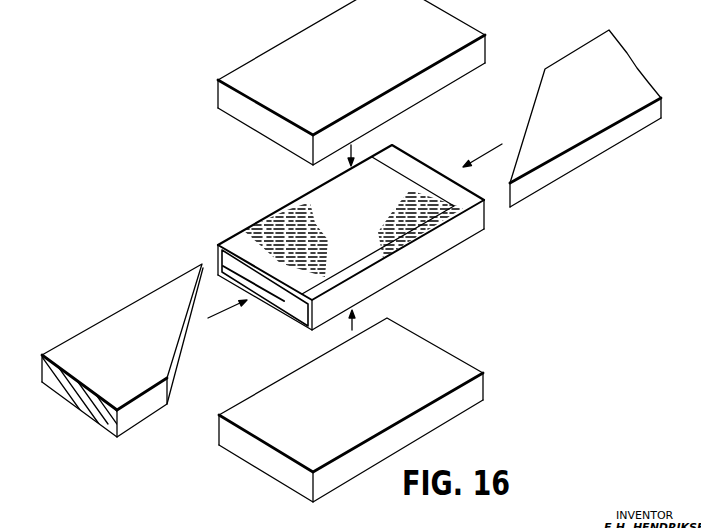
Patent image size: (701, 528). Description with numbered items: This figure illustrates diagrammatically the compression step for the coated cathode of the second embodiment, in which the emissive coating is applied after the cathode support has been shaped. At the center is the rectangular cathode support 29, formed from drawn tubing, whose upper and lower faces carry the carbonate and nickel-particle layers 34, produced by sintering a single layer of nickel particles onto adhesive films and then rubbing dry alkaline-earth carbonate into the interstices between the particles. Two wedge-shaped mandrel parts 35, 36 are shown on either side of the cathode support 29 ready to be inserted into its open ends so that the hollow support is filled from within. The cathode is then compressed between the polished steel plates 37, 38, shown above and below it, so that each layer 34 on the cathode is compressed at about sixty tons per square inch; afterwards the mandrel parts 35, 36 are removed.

The cathode support 29 is at (222, 258).
The carbonate and nickel-particle layers 34 is at (263, 237).
The wedge-shaped mandrel part 35 is at (128, 327).
The wedge-shaped mandrel part 36 is at (600, 111).
The polished steel plate 37 is at (313, 50).
The polished steel plate 38 is at (417, 393).